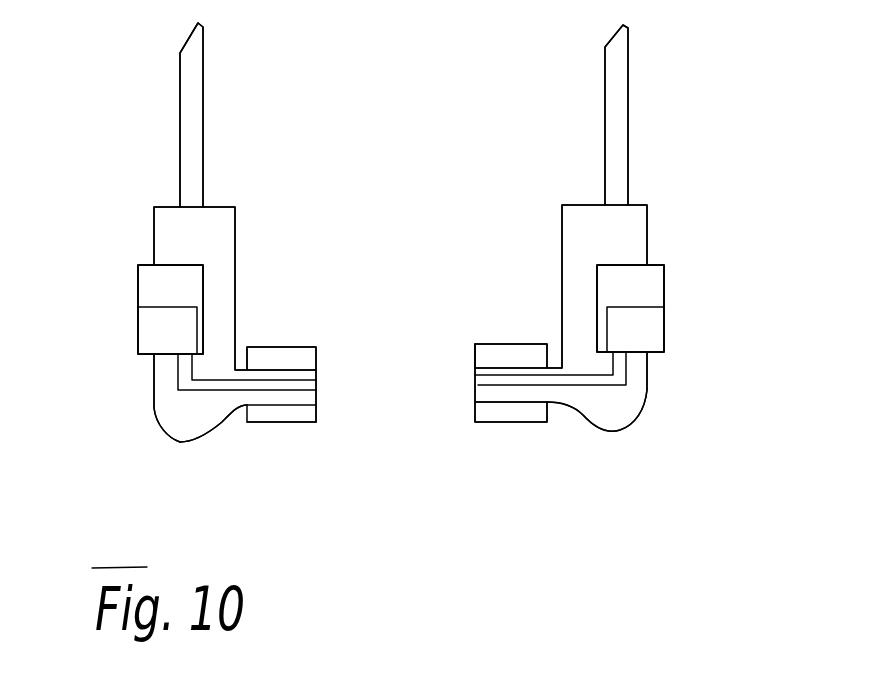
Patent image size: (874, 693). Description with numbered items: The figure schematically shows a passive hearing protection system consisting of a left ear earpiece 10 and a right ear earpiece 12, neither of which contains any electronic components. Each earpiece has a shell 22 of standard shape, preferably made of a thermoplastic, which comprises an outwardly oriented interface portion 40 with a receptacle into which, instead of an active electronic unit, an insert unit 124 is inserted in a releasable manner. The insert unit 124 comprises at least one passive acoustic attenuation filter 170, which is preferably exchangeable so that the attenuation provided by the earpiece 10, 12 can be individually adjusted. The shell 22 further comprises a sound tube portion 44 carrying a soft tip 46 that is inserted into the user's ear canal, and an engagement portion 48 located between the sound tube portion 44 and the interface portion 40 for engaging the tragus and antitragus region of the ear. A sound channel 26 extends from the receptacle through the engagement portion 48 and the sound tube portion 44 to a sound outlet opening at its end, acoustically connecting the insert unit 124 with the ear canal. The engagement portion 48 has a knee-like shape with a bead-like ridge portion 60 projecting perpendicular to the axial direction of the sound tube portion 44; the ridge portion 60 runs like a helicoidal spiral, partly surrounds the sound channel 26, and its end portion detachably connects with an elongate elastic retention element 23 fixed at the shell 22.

The left ear earpiece 10 is at (243, 167).
The right ear earpiece 12 is at (650, 173).
The shell 22 is at (222, 245).
The elongate elastic retention element 23 is at (197, 107).
The sound channel 26 is at (220, 383).
The interface portion 40 is at (150, 240).
The sound tube portion 44 is at (270, 365).
The soft tip 46 is at (293, 413).
The engagement portion 48 is at (157, 422).
The ridge portion 60 is at (188, 432).
The insert unit 124 is at (130, 287).
The passive acoustic attenuation filter 170 is at (157, 327).